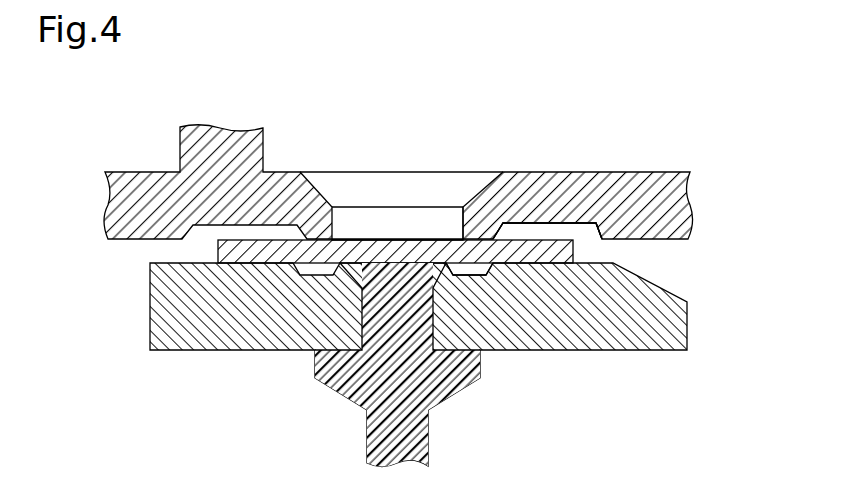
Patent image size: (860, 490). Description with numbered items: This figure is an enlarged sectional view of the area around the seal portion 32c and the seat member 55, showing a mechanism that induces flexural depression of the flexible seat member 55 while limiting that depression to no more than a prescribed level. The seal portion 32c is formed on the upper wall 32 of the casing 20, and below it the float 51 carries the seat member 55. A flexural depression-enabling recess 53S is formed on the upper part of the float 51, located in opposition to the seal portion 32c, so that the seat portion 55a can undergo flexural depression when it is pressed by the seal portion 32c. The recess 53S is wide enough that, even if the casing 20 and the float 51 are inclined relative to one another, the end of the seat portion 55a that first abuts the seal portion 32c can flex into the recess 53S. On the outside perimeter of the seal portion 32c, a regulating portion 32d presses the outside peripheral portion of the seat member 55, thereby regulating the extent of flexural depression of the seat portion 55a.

The casing 20 is at (122, 208).
The upper wall 32 is at (395, 251).
The seal portion 32c is at (463, 236).
The regulating portion 32d is at (603, 225).
The float 51 is at (688, 315).
The flexural depression-enabling recess 53S is at (478, 270).
The seat portion 55a is at (599, 227).
The seat member 55 is at (547, 231).